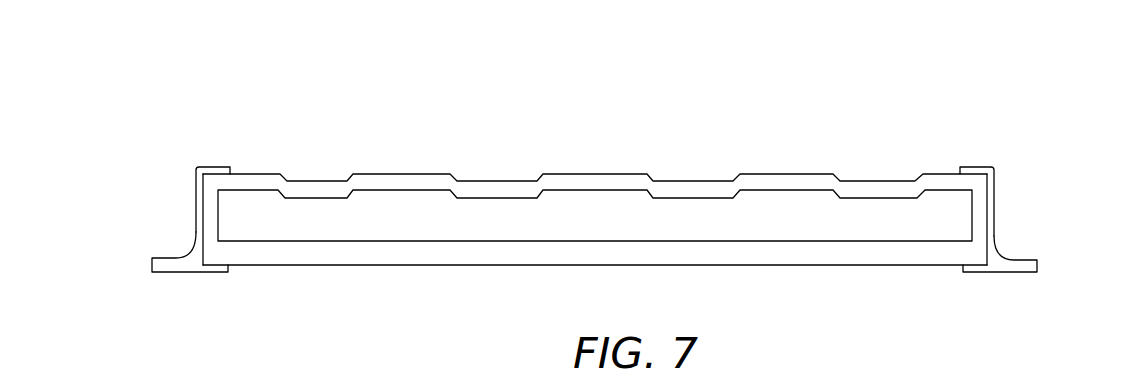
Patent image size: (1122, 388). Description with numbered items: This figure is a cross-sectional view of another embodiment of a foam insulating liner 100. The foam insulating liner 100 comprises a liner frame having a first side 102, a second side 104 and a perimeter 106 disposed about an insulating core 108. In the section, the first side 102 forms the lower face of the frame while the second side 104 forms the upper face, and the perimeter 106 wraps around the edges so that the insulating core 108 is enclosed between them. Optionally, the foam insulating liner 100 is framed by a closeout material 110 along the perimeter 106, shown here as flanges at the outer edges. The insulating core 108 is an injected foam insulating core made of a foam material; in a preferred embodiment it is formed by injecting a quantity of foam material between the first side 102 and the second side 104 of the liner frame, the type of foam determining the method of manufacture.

The foam insulating liner 100 is at (299, 86).
The first side 102 is at (618, 258).
The second side 104 is at (580, 178).
The perimeter 106 is at (210, 173).
The insulating core 108 is at (398, 230).
The closeout material 110 is at (194, 232).